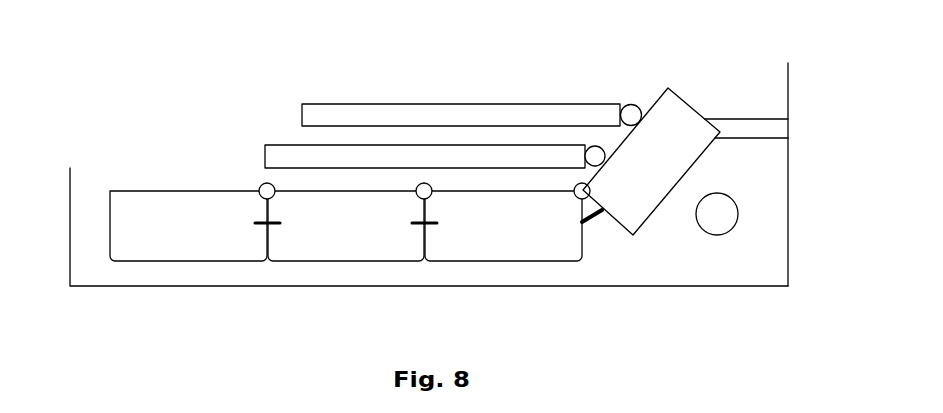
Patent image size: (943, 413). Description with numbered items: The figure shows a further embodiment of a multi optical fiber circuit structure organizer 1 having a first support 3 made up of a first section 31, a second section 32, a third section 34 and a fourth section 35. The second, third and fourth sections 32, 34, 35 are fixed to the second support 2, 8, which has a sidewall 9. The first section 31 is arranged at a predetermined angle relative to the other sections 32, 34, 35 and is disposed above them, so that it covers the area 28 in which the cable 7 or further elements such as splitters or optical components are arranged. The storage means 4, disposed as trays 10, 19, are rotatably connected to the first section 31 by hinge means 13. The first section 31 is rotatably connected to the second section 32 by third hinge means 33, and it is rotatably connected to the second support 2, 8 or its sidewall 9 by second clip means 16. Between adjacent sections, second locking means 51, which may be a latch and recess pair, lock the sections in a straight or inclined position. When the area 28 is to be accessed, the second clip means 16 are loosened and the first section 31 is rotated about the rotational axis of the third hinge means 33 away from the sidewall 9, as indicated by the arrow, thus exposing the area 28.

The multi optical fiber circuit structure organizer 1 is at (448, 160).
The second support 2 is at (118, 287).
The base 8 is at (422, 244).
The first support 3 is at (310, 259).
The storage means 4 is at (406, 107).
The cable 7 is at (738, 214).
The sidewall 9 is at (790, 162).
The tray 10 is at (345, 104).
The hinge means 13 is at (631, 105).
The second clip means 16 is at (760, 118).
The tray 19 is at (264, 155).
The area 28 is at (740, 263).
The first section 31 is at (689, 105).
The second section 32 is at (503, 232).
The third hinge means 33 is at (268, 182).
The third section 34 is at (355, 232).
The fourth section 35 is at (192, 236).
The second locking means 51 is at (273, 226).